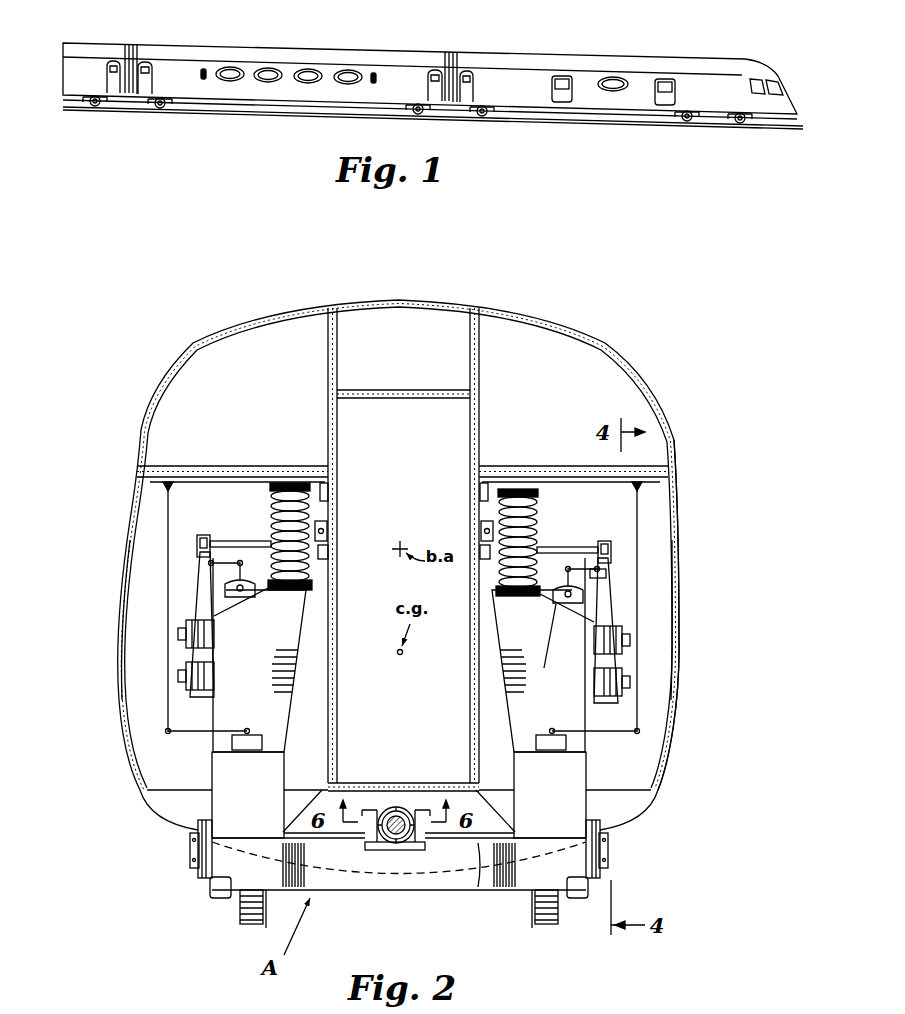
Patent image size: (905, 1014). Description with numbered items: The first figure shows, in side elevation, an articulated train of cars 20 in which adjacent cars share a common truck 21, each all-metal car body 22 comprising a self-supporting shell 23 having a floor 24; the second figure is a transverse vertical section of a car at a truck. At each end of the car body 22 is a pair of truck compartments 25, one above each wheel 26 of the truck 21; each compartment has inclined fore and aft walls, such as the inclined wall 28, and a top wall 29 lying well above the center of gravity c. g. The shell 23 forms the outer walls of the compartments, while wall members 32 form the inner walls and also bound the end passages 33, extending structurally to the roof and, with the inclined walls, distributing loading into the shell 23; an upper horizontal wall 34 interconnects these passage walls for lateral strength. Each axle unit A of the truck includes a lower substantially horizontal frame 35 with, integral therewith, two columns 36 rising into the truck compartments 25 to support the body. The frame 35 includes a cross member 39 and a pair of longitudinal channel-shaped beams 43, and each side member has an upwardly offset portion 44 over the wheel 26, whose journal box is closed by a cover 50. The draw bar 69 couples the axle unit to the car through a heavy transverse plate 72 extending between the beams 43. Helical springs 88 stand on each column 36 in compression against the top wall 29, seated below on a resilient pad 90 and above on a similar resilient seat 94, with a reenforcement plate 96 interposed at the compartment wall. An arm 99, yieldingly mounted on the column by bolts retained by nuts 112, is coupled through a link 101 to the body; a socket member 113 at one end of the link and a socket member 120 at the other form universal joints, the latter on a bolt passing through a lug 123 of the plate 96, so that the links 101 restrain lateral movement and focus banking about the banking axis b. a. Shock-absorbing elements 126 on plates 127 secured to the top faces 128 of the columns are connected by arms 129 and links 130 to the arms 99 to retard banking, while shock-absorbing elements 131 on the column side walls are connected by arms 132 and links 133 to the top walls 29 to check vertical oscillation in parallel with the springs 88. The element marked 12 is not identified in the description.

In FIG. 1, the cars 20 is at (102, 42).
In FIG. 1, the truck 21 is at (140, 108).
In FIG. 2, the truck 21 is at (388, 895).
In FIG. 1, the car body 22 is at (292, 85).
In FIG. 2, the car body 22 is at (138, 410).
In FIG. 2, the self-supporting shell 23 is at (684, 518).
In FIG. 2, the floor 24 is at (392, 796).
In FIG. 2, the truck compartments 25 is at (150, 668).
In FIG. 2, the wheel 26 is at (252, 926).
In FIG. 2, the inclined wall 28 is at (178, 558).
In FIG. 2, the top wall 29 is at (215, 466).
In FIG. 2, the wall members 32 is at (339, 641).
In FIG. 2, the end passages 33 is at (364, 710).
In FIG. 2, the upper horizontal wall 34 is at (400, 390).
In FIG. 2, the lower frame 35 is at (452, 873).
In FIG. 2, the columns 36 is at (255, 709).
In FIG. 2, the cross member 39 is at (480, 878).
In FIG. 2, the channel-shaped beams 43 is at (370, 815).
In FIG. 2, the upwardly offset portion 44 is at (245, 765).
In FIG. 2, the cover 50 is at (194, 847).
In FIG. 2, the draw bar 69 is at (397, 809).
In FIG. 2, the transverse plate 72 is at (412, 853).
In FIG. 2, the helical springs 88 is at (272, 504).
In FIG. 2, the resilient pad 90 is at (278, 592).
In FIG. 2, the resilient seat 94 is at (268, 488).
In FIG. 2, the reenforcement plate 96 is at (330, 491).
In FIG. 2, the arm 99 is at (196, 591).
In FIG. 2, the link 101 is at (242, 540).
In FIG. 2, the nut 112 is at (178, 668).
In FIG. 2, the socket member 113 is at (195, 542).
In FIG. 2, the socket member 120 is at (330, 563).
In FIG. 2, the lug 123 is at (330, 529).
In FIG. 2, the shock-absorbing elements 126 is at (240, 599).
In FIG. 2, the plates 127 is at (230, 599).
In FIG. 2, the top faces 128 is at (552, 660).
In FIG. 2, the arms 129 is at (228, 564).
In FIG. 2, the links 130 is at (612, 573).
In FIG. 2, the shock-absorbing elements 131 is at (265, 751).
In FIG. 2, the arms 132 is at (180, 722).
In FIG. 2, the links 133 is at (165, 690).
In FIG. 2, the body member 12 is at (478, 556).